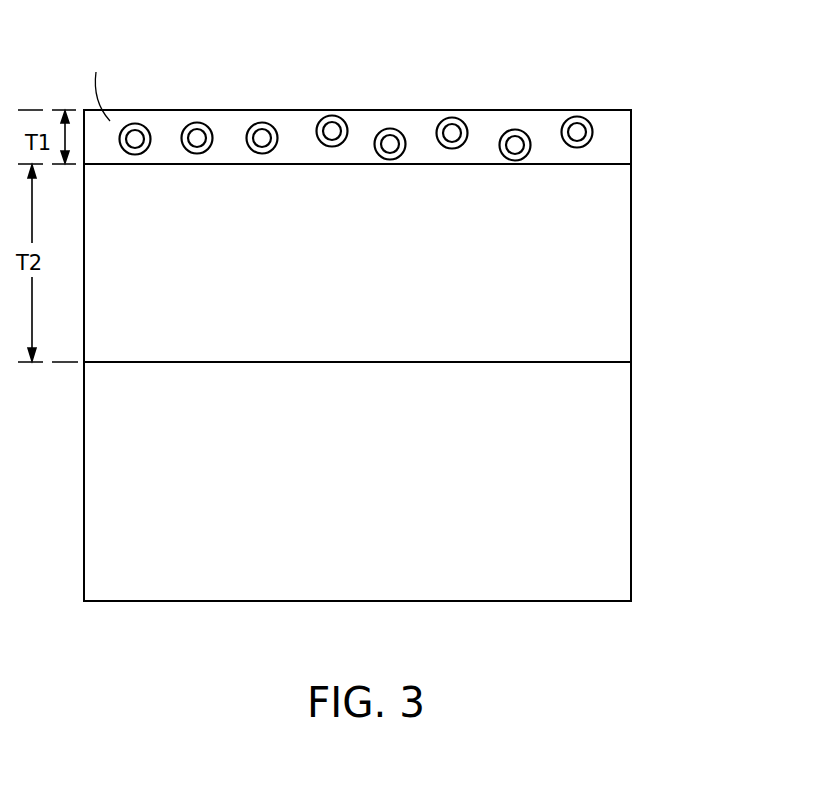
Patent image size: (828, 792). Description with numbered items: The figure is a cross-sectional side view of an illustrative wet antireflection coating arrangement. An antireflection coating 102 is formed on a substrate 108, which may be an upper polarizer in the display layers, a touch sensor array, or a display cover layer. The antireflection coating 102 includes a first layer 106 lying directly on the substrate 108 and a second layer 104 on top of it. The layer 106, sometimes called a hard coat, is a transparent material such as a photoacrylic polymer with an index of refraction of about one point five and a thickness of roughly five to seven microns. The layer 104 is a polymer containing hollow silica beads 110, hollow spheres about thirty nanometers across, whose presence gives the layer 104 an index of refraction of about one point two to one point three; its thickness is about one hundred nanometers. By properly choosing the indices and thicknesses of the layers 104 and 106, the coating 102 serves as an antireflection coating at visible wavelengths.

The antireflection coating 102 is at (406, 221).
The layer 104 is at (356, 105).
The layer 106 is at (620, 344).
The substrate 108 is at (616, 474).
The hollow silica beads 110 is at (391, 128).